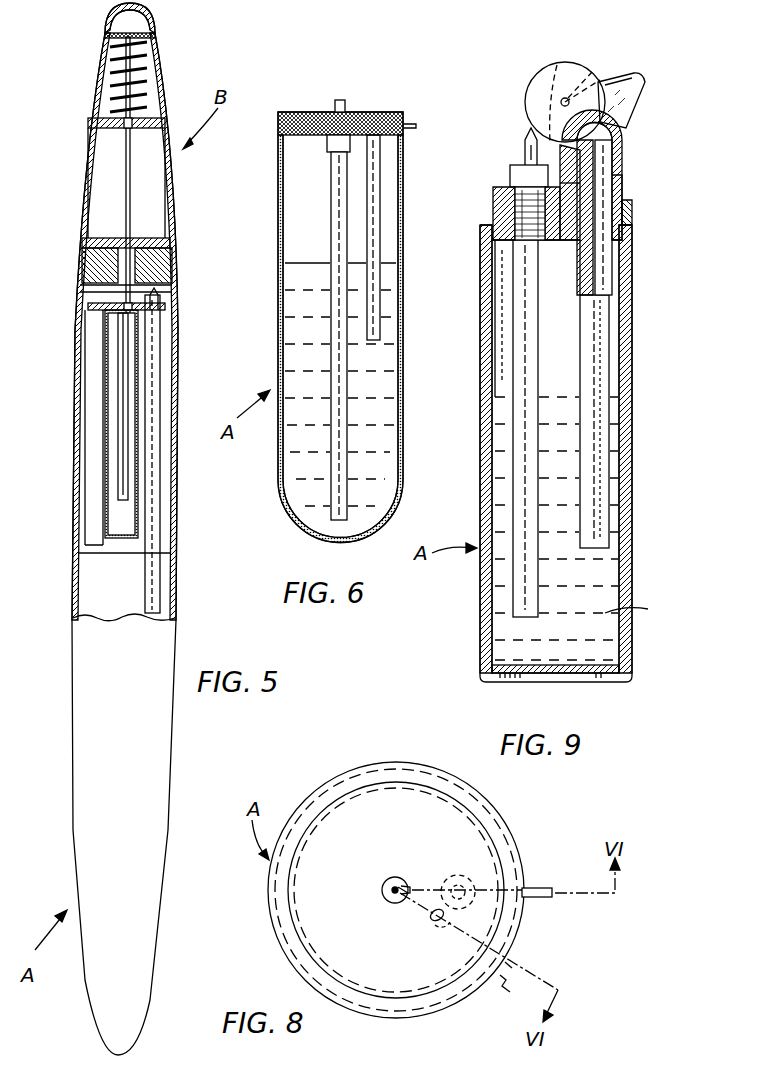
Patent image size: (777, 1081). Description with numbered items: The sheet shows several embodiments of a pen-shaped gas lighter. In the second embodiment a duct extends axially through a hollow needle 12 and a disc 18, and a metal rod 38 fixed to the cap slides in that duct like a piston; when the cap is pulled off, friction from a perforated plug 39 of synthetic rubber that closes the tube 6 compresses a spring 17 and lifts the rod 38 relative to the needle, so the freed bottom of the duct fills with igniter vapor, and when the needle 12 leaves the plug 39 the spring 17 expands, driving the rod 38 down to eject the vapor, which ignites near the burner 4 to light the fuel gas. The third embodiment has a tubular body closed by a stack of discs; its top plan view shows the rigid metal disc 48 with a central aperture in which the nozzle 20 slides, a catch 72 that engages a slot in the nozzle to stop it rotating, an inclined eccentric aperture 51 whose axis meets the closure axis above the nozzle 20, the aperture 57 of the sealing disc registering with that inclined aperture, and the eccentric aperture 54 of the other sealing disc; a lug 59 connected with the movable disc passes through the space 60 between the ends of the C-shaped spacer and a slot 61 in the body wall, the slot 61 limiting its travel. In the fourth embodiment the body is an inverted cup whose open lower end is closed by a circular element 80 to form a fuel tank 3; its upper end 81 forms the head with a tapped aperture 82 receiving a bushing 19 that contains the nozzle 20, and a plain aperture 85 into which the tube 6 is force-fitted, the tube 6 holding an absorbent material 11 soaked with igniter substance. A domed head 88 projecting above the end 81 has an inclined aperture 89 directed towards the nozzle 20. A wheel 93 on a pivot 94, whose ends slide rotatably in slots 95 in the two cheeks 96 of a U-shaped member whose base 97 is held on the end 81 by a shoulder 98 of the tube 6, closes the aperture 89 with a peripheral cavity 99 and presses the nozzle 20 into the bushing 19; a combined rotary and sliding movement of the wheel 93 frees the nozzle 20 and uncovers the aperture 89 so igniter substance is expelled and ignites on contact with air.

In FIG. 5, the metal rod 38 is at (130, 22).
In FIG. 5, the disc 18 is at (155, 35).
In FIG. 5, the spring 17 is at (150, 72).
In FIG. 5, the needle 12 is at (122, 190).
In FIG. 5, the perforated plug 39 is at (110, 302).
In FIG. 5, the tube 6 is at (106, 400).
In FIG. 6, the tube 6 is at (375, 178).
In FIG. 9, the tube 6 is at (606, 355).
In FIG. 6, the burner 4 is at (342, 100).
In FIG. 9, the tank 3 is at (635, 613).
In FIG. 9, the circular element 80 is at (500, 668).
In FIG. 9, the absorbent material 11 is at (606, 296).
In FIG. 9, the domed head 88 is at (623, 118).
In FIG. 9, the aperture 89 is at (618, 135).
In FIG. 9, the shoulder 98 is at (622, 175).
In FIG. 9, the plain aperture 85 is at (622, 210).
In FIG. 9, the wheel 93 is at (558, 63).
In FIG. 9, the pivot 94 is at (560, 97).
In FIG. 9, the cavity 99 is at (589, 76).
In FIG. 9, the slots 95 is at (622, 80).
In FIG. 9, the cheeks 96 is at (640, 84).
In FIG. 9, the base 97 is at (566, 212).
In FIG. 9, the nozzle 20 is at (528, 147).
In FIG. 8, the nozzle 20 is at (389, 876).
In FIG. 9, the bushing 19 is at (516, 175).
In FIG. 9, the upper end 81 is at (496, 200).
In FIG. 9, the tapped aperture 82 is at (509, 218).
In FIG. 8, the catch 72 is at (406, 889).
In FIG. 8, the eccentric aperture 54 is at (458, 876).
In FIG. 8, the rigid metal disc 48 is at (344, 921).
In FIG. 8, the eccentric aperture 51 is at (433, 920).
In FIG. 8, the aperture 57 is at (452, 930).
In FIG. 8, the lug 59 is at (542, 890).
In FIG. 8, the slot 61 is at (518, 948).
In FIG. 8, the space 60 is at (483, 988).